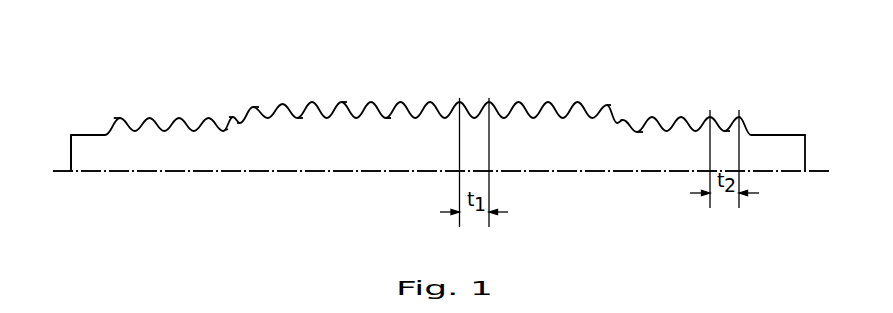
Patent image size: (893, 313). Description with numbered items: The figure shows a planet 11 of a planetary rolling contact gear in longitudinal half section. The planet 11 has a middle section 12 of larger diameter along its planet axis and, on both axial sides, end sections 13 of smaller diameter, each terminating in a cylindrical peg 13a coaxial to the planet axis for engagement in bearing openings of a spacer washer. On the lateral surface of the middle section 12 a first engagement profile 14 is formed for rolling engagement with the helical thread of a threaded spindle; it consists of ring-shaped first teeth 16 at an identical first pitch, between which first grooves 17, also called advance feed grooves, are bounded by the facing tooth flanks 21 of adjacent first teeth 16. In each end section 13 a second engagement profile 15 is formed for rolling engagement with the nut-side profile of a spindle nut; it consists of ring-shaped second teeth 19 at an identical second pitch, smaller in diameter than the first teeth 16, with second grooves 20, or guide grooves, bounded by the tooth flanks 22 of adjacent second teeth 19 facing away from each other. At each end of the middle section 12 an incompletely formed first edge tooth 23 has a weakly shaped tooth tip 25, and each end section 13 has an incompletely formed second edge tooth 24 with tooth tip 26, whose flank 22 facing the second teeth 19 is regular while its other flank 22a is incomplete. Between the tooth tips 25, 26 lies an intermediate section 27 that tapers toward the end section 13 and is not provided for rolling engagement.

The planet 11 is at (297, 150).
The middle section 12 is at (325, 210).
The end section 13 is at (143, 153).
The cylindrical peg 13a is at (88, 147).
The first engagement profile 14 is at (385, 108).
The second engagement profile 15 is at (125, 119).
The first teeth 16 is at (343, 110).
The first grooves 17 is at (302, 108).
The second teeth 19 is at (745, 126).
The second grooves 20 is at (728, 124).
The tooth flanks 21 is at (385, 108).
The tooth flanks 22 is at (230, 122).
The tooth flank 22a is at (622, 119).
The first edge tooth 23 is at (258, 108).
The second edge tooth 24 is at (230, 120).
The tooth tip 25 is at (618, 121).
The tooth tip 26 is at (627, 119).
The intermediate section 27 is at (243, 121).